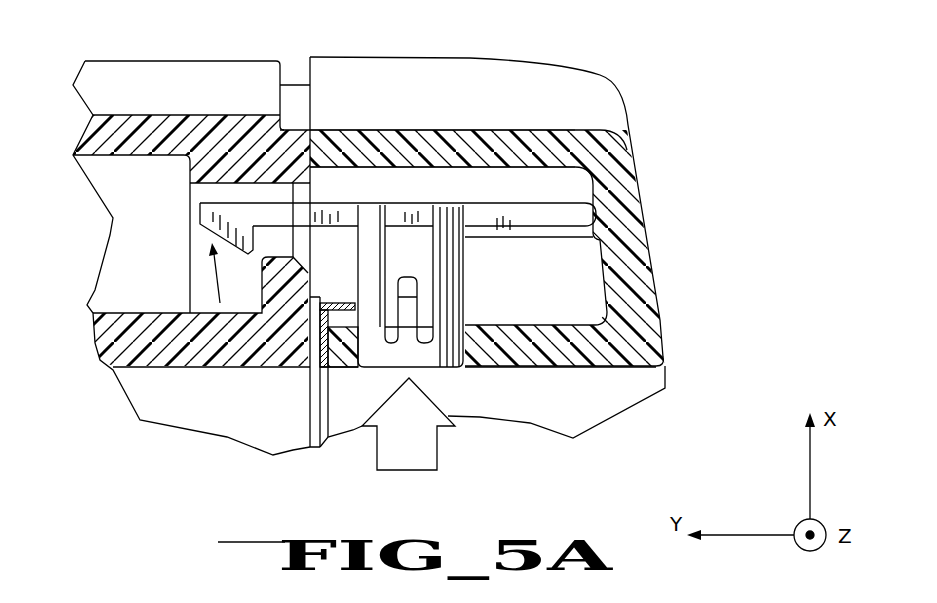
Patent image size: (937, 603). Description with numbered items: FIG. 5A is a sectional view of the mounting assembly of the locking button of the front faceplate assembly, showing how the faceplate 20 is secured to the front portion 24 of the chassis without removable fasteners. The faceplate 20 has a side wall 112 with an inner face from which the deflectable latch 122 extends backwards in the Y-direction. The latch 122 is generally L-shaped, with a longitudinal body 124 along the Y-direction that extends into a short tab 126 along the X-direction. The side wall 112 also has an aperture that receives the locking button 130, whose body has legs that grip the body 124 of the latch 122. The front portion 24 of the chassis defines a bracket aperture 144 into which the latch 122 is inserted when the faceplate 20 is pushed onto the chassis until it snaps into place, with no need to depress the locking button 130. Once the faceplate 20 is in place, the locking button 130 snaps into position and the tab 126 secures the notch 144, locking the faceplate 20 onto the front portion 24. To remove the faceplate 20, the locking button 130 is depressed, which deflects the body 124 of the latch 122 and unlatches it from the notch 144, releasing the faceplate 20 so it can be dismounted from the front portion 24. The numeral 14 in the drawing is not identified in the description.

The first member 14 is at (97, 60).
The faceplate 20 is at (605, 80).
The front portion 24 is at (278, 192).
The bracket aperture 144 is at (350, 137).
The deflectable latch 122 is at (412, 185).
The longitudinal body 124 is at (495, 228).
The short tab 126 is at (217, 222).
The locking button 130 is at (445, 348).
The side wall 112 is at (590, 366).